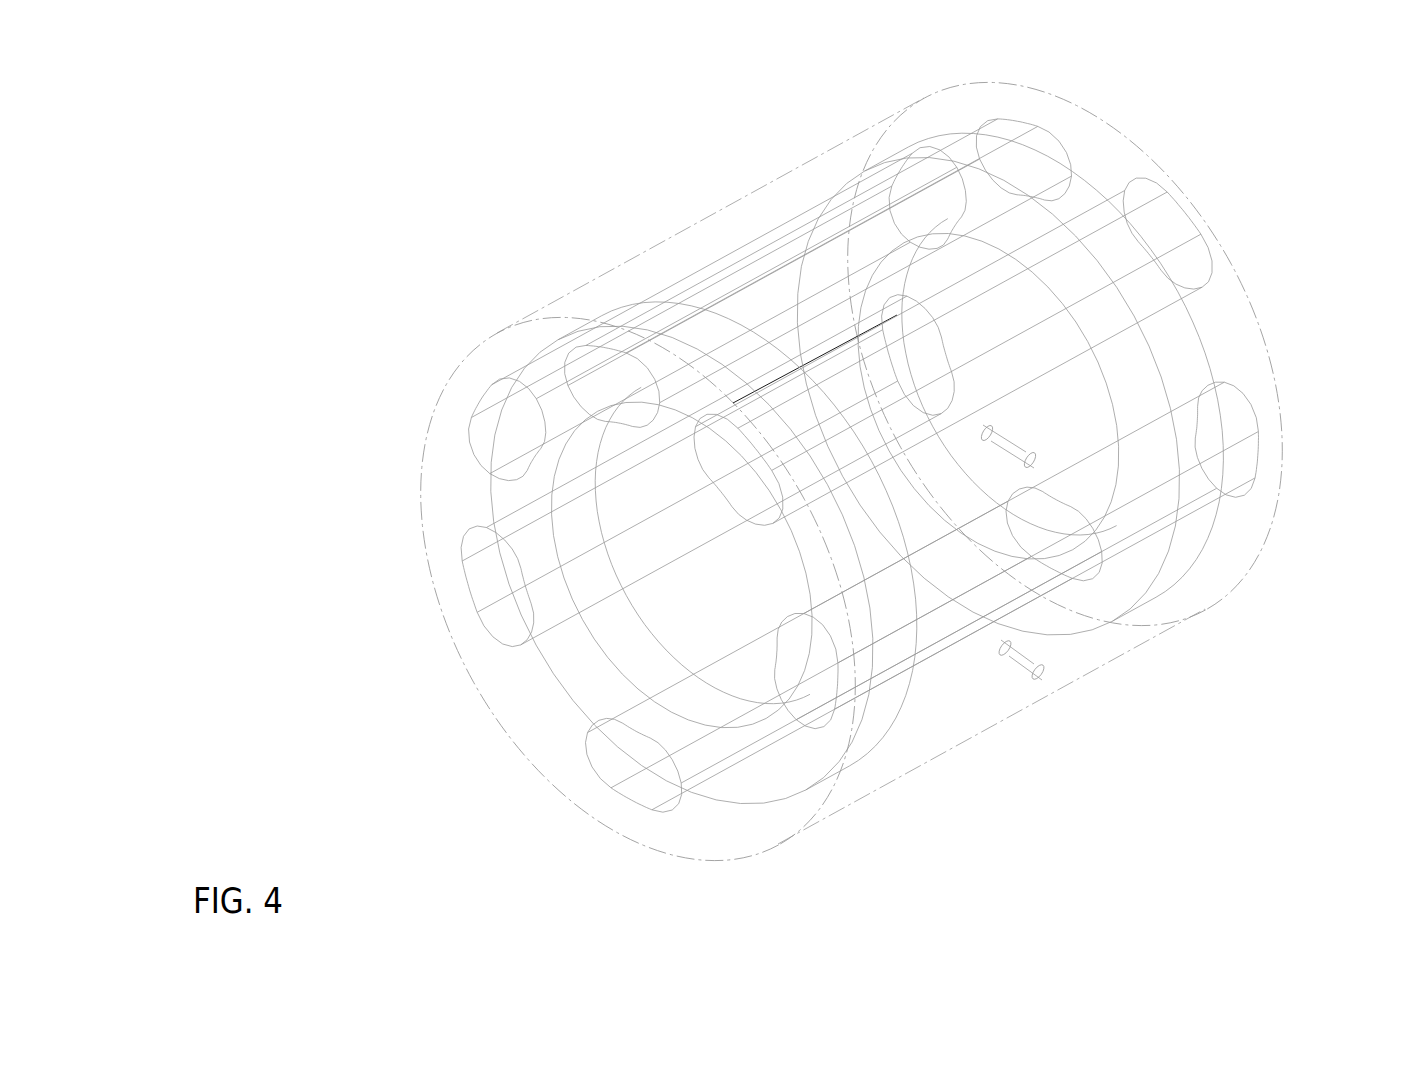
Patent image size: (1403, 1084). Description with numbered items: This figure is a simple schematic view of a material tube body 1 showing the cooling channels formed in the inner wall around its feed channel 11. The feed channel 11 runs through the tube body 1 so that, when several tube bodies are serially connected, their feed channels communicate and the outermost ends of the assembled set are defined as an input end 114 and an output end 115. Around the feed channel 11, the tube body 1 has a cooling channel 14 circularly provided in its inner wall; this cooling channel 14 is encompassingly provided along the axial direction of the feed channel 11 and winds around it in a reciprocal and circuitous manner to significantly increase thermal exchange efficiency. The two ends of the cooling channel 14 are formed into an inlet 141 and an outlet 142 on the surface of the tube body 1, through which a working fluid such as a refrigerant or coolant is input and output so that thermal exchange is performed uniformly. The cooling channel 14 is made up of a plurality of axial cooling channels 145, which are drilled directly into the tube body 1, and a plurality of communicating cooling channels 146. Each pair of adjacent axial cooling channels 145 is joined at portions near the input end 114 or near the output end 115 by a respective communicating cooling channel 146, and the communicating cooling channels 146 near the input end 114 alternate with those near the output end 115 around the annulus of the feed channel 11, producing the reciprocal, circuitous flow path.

The material tube body 1 is at (568, 293).
The feed channel 11 is at (500, 702).
The input end 114 is at (1250, 285).
The output end 115 is at (510, 763).
The cooling channel 14 is at (700, 258).
The inlet 141 is at (1012, 430).
The outlet 142 is at (1025, 672).
The axial cooling channels 145 is at (795, 228).
The communicating cooling channels 146 is at (1160, 250).